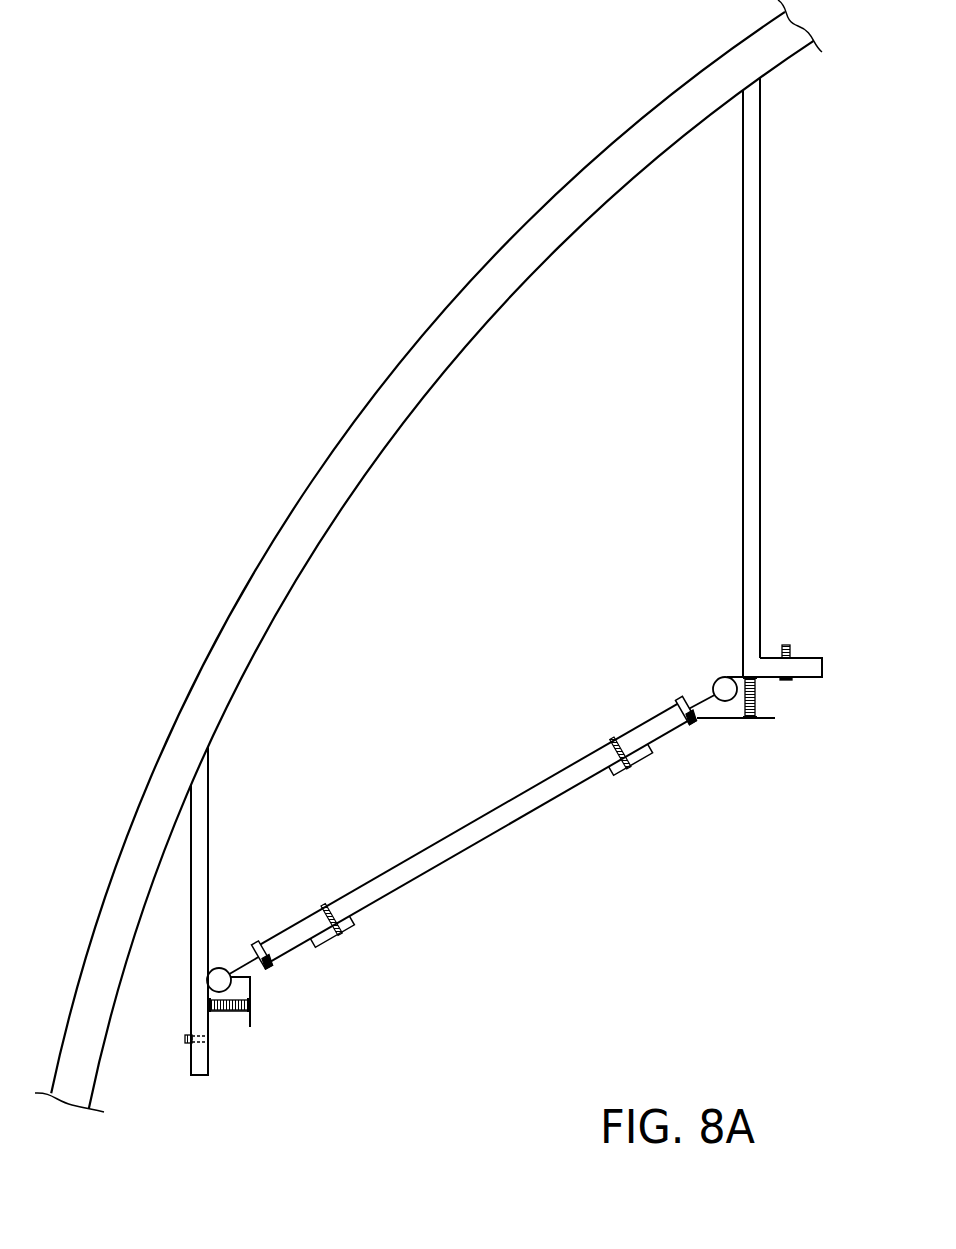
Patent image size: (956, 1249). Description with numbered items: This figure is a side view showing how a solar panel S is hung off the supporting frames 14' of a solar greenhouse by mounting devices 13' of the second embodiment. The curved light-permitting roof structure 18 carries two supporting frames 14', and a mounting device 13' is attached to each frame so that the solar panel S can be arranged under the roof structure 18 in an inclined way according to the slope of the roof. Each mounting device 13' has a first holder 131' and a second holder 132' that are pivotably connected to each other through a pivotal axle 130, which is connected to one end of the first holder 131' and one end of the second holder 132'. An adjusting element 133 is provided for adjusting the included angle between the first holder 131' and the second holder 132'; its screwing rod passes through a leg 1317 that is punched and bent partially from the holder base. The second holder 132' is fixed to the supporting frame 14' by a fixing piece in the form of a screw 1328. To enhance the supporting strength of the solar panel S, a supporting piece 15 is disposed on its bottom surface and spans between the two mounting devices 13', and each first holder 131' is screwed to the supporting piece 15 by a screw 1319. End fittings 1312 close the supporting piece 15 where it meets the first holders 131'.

The light-permitting roof structure 18 is at (410, 372).
The supporting frame 14' is at (475, 576).
The mounting device 13' is at (448, 846).
The pivotal axle 130 is at (725, 683).
The first holder 131' is at (481, 906).
The second holder 132' is at (554, 842).
The adjusting element 133 is at (764, 695).
The end cap 1312 is at (677, 704).
The leg 1317 is at (723, 718).
The screw 1319 is at (632, 770).
The screw 1328 is at (787, 644).
The supporting piece 15 is at (444, 868).
The solar panel S is at (477, 825).